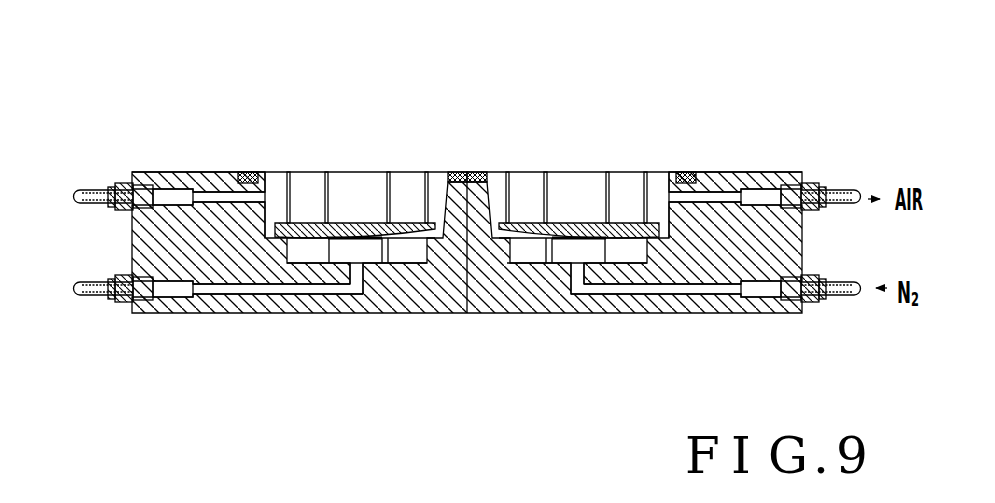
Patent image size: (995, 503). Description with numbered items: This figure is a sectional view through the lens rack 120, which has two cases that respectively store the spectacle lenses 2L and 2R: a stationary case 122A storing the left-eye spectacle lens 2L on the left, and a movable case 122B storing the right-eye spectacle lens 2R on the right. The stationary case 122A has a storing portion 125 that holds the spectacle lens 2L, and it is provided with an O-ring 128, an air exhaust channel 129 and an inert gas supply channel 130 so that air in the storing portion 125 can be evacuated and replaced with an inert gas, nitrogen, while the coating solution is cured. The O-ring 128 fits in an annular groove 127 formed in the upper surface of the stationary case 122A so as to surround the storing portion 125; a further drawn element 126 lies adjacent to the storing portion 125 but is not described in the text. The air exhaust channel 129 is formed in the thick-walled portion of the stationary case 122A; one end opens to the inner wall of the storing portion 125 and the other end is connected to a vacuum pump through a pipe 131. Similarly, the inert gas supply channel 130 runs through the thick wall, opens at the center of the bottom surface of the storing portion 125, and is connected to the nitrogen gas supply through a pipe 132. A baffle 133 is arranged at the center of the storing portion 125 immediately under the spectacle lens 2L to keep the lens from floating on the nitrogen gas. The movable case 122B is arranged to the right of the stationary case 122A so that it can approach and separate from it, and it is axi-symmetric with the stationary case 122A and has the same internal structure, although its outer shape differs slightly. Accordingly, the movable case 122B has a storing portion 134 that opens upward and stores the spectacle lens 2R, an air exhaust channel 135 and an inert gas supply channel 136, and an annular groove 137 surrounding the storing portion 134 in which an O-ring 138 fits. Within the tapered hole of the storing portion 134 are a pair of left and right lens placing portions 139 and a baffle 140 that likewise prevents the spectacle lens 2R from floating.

The lens rack 120 is at (508, 37).
The stationary case 122A is at (209, 152).
The movable case 122B is at (644, 150).
The storing portion 125 is at (270, 236).
The left electrode / lower cavity 126 is at (277, 234).
The annular groove 127 is at (258, 180).
The O-ring 128 is at (244, 176).
The air exhaust channel 129 is at (165, 195).
The inert gas supply channel 130 is at (207, 290).
The pipe 131 is at (88, 190).
The pipe 132 is at (88, 282).
The baffle 133 is at (366, 240).
The storing portion 134 is at (668, 218).
The air exhaust channel 135 is at (752, 186).
The inert gas supply channel 136 is at (702, 290).
The annular groove 137 is at (704, 180).
The O-ring 138 is at (689, 177).
The lens placing portions 139 is at (495, 236).
The baffle 140 is at (580, 238).
The left-eye spectacle lens 2L is at (409, 222).
The right-eye spectacle lens 2R is at (548, 234).